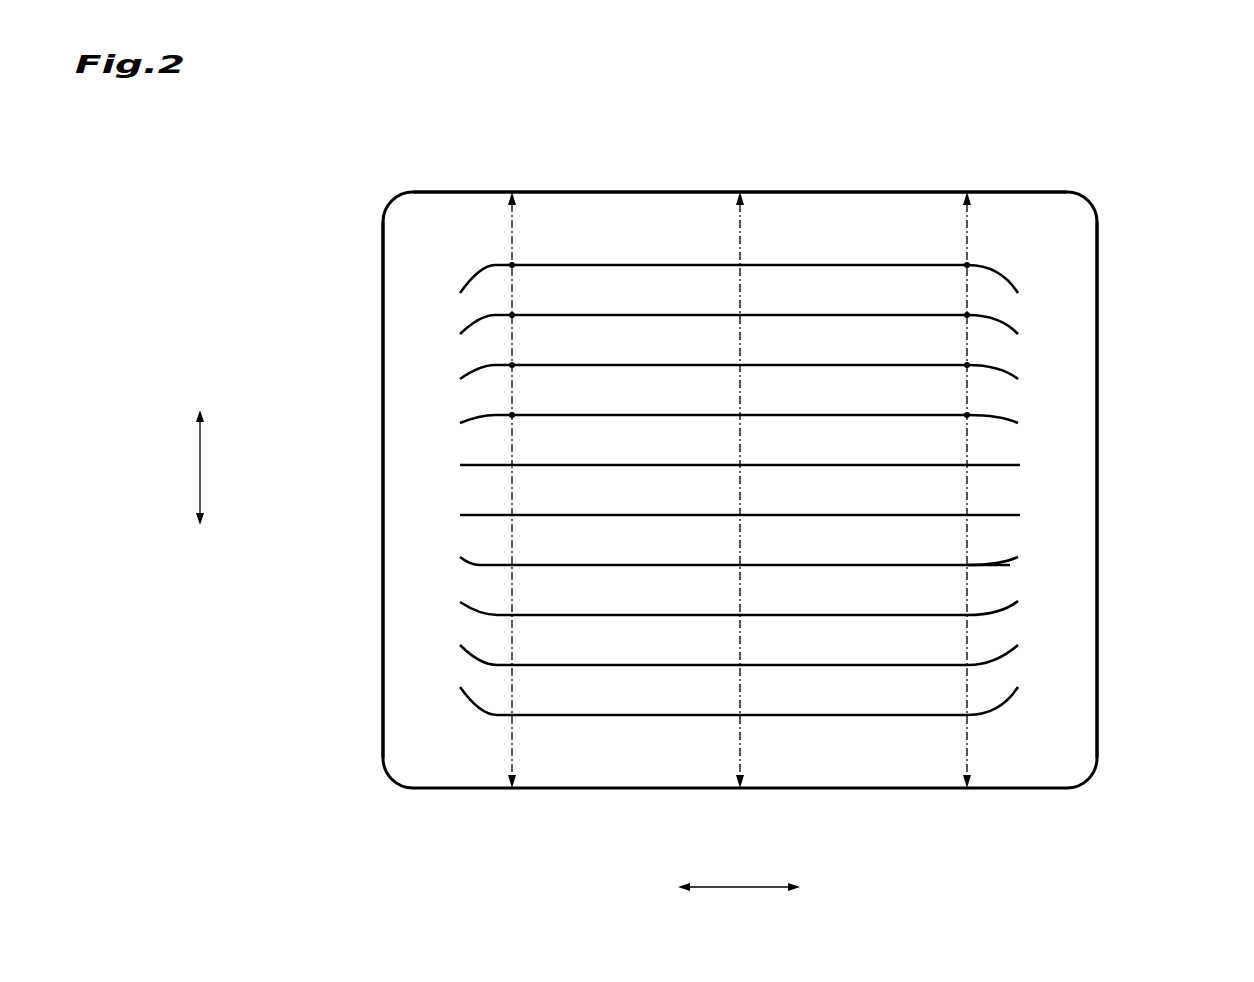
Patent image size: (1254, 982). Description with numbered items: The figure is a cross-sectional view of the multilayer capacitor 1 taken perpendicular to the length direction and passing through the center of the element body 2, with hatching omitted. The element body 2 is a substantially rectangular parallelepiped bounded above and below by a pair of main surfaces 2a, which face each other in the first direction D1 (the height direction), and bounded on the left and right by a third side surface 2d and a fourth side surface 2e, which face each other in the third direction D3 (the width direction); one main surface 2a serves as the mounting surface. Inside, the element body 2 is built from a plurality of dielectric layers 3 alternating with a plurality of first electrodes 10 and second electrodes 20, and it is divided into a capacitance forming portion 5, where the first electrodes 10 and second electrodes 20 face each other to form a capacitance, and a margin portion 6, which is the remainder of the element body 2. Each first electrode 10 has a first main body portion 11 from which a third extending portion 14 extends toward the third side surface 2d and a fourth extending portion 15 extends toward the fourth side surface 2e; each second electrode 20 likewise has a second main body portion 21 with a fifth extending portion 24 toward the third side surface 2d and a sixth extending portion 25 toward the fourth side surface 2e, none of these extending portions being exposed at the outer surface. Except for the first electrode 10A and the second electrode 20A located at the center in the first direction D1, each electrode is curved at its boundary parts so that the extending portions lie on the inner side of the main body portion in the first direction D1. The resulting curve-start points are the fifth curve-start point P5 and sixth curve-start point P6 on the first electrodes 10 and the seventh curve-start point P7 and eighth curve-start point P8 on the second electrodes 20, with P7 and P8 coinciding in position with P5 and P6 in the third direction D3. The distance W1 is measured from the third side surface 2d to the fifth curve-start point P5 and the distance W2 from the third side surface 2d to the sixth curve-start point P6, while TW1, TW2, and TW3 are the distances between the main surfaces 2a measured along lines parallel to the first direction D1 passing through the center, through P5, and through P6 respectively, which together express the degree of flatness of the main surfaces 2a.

The multilayer capacitor 1 is at (1187, 160).
The element body 2 is at (1050, 192).
The main surfaces 2a is at (713, 192).
The third side surface 2d is at (383, 464).
The fourth side surface 2e is at (1097, 479).
The dielectric layers 3 is at (855, 338).
The capacitance forming portion 5 is at (578, 260).
The margin portion 6 is at (425, 216).
The first electrodes 10 is at (787, 363).
The first electrode located at the center 10A is at (478, 467).
The first main body portion 11 is at (910, 363).
The third extending portion 14 is at (478, 269).
The fourth extending portion 15 is at (1008, 282).
The second electrodes 20 is at (650, 415).
The second electrode located at the center 20A is at (1010, 517).
The second main body portion 21 is at (705, 415).
The fifth extending portion 24 is at (477, 417).
The sixth extending portion 25 is at (1010, 417).
The fifth curve-start point P5 is at (512, 365).
The sixth curve-start point P6 is at (967, 365).
The seventh curve-start point P7 is at (512, 317).
The eighth curve-start point P8 is at (968, 317).
The distance between the third side surface and the fifth curve-start point W1 is at (512, 449).
The distance between the third side surface and the sixth curve-start point W2 is at (967, 449).
The distance between the main surfaces at the center TW1 is at (738, 747).
The distance between the main surfaces through the fifth curve-start point TW2 is at (508, 747).
The distance between the main surfaces through the sixth curve-start point TW3 is at (978, 740).
The first direction D1 is at (200, 467).
The width direction D3 is at (740, 892).